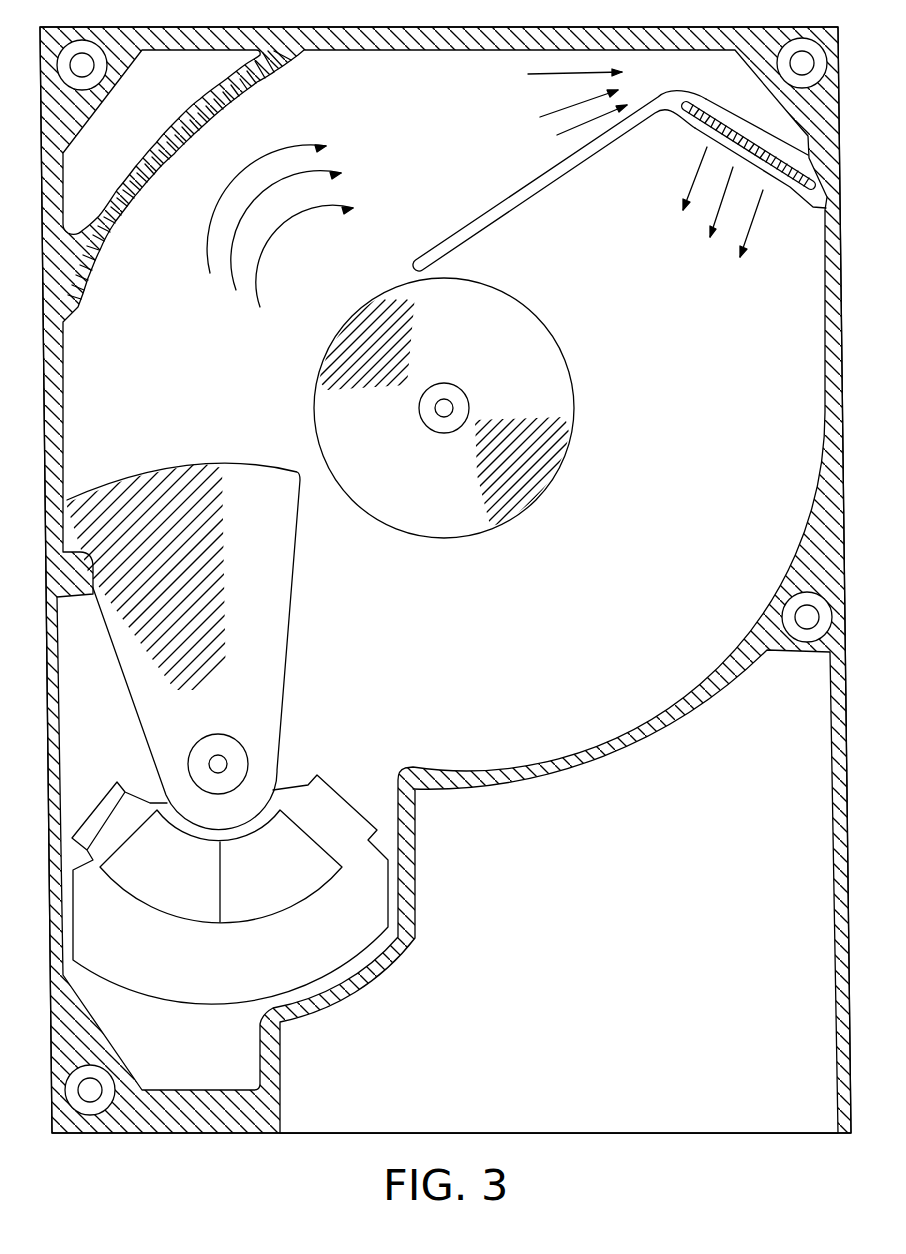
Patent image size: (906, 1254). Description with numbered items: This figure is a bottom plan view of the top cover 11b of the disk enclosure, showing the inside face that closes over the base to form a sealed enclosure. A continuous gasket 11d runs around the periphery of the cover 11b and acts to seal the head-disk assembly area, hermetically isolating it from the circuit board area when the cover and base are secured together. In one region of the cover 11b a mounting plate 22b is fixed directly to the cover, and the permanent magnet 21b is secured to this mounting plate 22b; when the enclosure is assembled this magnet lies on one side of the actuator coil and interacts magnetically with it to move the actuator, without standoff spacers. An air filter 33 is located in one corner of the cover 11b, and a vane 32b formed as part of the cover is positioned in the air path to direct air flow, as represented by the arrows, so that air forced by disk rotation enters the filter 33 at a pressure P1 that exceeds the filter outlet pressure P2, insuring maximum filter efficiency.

The top cover 11b is at (606, 955).
The continuous gasket 11d is at (826, 372).
The permanent magnetic member 21b is at (259, 874).
The mounting plate 22b is at (259, 956).
The vane 32b is at (588, 159).
The air filter 33 is at (757, 166).
The filter inlet air pressure P1 is at (723, 72).
The filter outlet pressure P2 is at (658, 151).